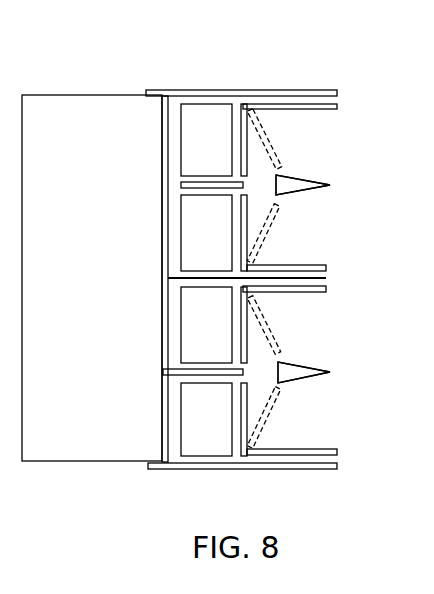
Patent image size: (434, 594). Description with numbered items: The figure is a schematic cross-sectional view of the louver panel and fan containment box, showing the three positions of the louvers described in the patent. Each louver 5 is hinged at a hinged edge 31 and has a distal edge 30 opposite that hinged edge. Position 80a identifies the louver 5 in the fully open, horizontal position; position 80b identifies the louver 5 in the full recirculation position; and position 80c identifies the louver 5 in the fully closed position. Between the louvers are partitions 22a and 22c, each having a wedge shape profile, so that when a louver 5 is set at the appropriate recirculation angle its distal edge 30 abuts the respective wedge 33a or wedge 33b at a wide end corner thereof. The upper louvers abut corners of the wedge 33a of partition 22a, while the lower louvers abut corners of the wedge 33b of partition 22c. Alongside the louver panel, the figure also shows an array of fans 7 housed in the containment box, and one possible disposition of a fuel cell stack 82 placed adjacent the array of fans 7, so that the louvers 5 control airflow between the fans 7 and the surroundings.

The fuel cell stack 82 is at (110, 302).
The fan 7 is at (215, 154).
The fully closed position 80c is at (241, 128).
The fully open position 80a is at (300, 91).
The full recirculation position 80b is at (272, 152).
The louver 5 is at (270, 91).
The distal edge 30 is at (327, 288).
The hinged edge 31 is at (250, 108).
The partition 22a is at (325, 188).
The wedge 33a is at (318, 182).
The partition 22c is at (326, 374).
The wedge 33b is at (317, 370).